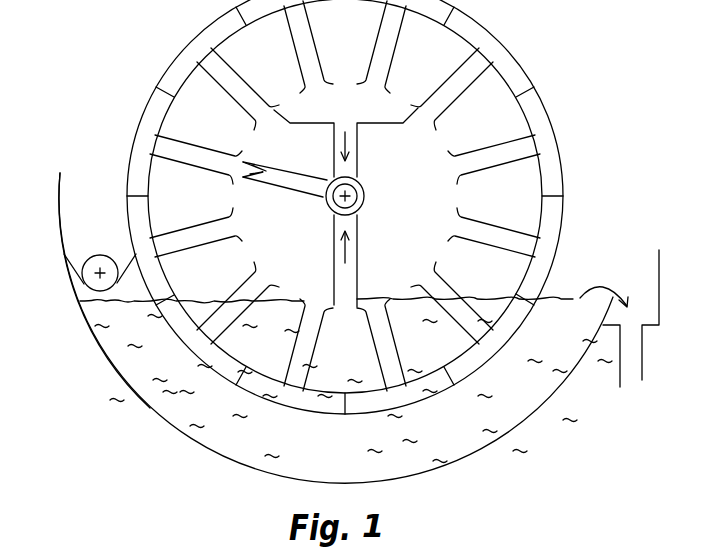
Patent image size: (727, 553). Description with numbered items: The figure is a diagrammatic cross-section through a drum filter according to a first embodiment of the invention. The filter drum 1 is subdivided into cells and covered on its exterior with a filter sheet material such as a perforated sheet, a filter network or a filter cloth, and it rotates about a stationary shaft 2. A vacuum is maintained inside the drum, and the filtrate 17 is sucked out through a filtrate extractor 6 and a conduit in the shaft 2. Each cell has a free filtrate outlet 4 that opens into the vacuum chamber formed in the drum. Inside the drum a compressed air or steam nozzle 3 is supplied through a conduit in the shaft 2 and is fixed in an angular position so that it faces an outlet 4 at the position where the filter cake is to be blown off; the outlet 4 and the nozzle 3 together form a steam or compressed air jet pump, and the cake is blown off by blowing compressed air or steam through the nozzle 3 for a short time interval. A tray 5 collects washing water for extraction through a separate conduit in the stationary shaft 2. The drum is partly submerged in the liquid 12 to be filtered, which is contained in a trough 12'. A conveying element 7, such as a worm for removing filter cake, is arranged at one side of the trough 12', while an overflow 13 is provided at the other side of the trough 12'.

The filter drum 1 is at (541, 98).
The stationary shaft 2 is at (365, 197).
The nozzle 3 is at (302, 192).
The filtrate outlet 4 is at (219, 167).
The tray 5 is at (363, 118).
The filtrate extractor 6 is at (355, 262).
The conveying element 7 is at (100, 255).
The liquid 12 is at (336, 328).
The trough 12' is at (111, 308).
The overflow 13 is at (657, 272).
The filtrate 17 is at (280, 360).